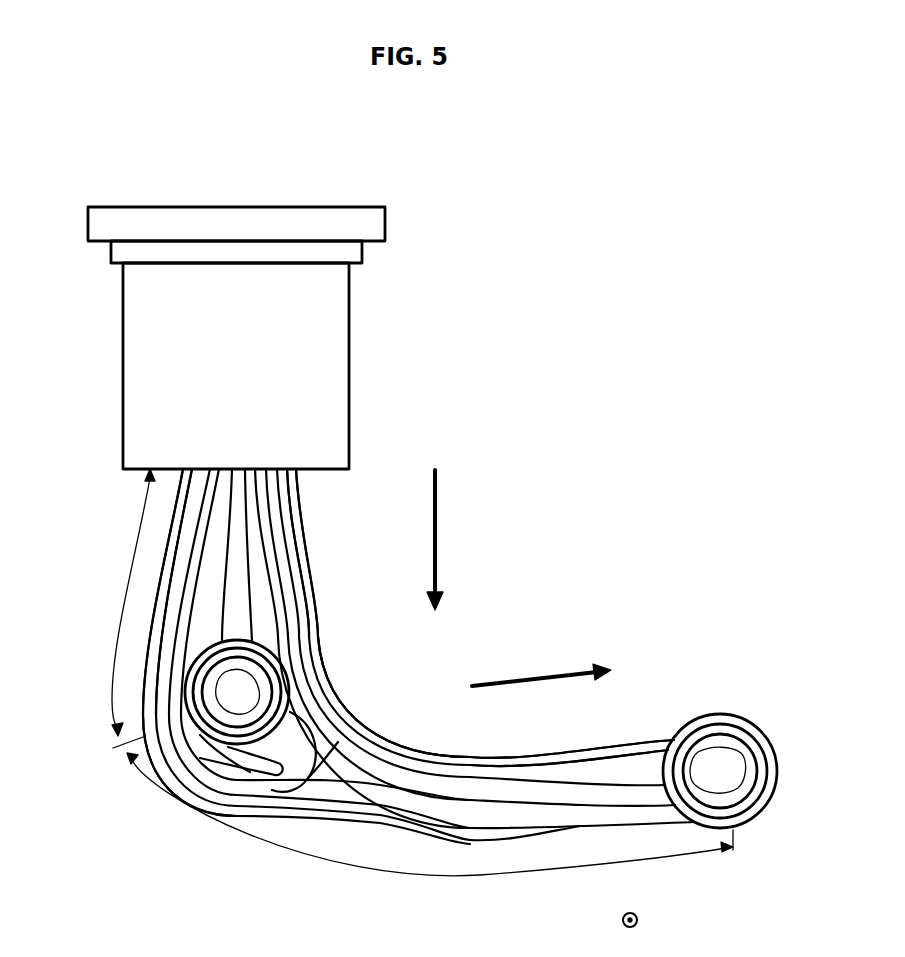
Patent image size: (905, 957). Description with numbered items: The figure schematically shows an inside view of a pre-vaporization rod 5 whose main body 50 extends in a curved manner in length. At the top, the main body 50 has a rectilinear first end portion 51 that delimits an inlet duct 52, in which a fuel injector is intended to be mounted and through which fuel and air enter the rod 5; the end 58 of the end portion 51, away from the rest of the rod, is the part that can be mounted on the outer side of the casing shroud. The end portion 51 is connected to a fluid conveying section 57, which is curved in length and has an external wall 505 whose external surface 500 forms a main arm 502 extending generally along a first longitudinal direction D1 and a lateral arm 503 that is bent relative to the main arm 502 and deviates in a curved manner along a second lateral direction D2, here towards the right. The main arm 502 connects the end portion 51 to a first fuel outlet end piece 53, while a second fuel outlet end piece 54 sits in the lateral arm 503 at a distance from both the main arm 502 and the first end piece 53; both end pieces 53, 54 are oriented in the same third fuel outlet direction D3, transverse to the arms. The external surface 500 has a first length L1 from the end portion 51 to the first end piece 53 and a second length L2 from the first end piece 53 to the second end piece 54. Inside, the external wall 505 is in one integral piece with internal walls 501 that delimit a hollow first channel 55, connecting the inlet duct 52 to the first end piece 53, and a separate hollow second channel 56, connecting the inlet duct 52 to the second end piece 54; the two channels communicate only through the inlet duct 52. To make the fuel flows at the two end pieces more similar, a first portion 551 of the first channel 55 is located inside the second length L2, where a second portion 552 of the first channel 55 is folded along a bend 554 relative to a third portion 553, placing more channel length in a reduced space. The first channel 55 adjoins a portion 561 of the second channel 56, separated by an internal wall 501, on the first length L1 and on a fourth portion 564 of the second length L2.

The pre-vaporization rod 5 is at (421, 519).
The main body 50 is at (325, 600).
The first end portion 51 is at (330, 365).
The inlet duct 52 is at (238, 178).
The first fuel outlet end piece 53 is at (264, 638).
The second fuel outlet end piece 54 is at (721, 706).
The first channel 55 is at (211, 523).
The second channel 56 is at (264, 551).
The fluid conveying section 57 is at (475, 598).
The end of the end portion 58 is at (148, 226).
The external surface 500 is at (533, 753).
The internal wall 501 is at (235, 595).
The main arm 502 is at (305, 515).
The lateral arm 503 is at (603, 745).
The external wall 505 is at (172, 550).
The first portion of the first channel 551 is at (257, 777).
The second portion of the first channel 552 is at (224, 756).
The third portion of the first channel 553 is at (303, 734).
The bend 554 is at (303, 780).
The portion of the second channel 561 is at (283, 495).
The fourth portion of the second length 564 is at (223, 812).
The first length L1 is at (122, 606).
The second length L2 is at (375, 868).
The first longitudinal direction D1 is at (437, 530).
The second lateral direction D2 is at (530, 674).
The third fuel outlet direction D3 is at (640, 918).